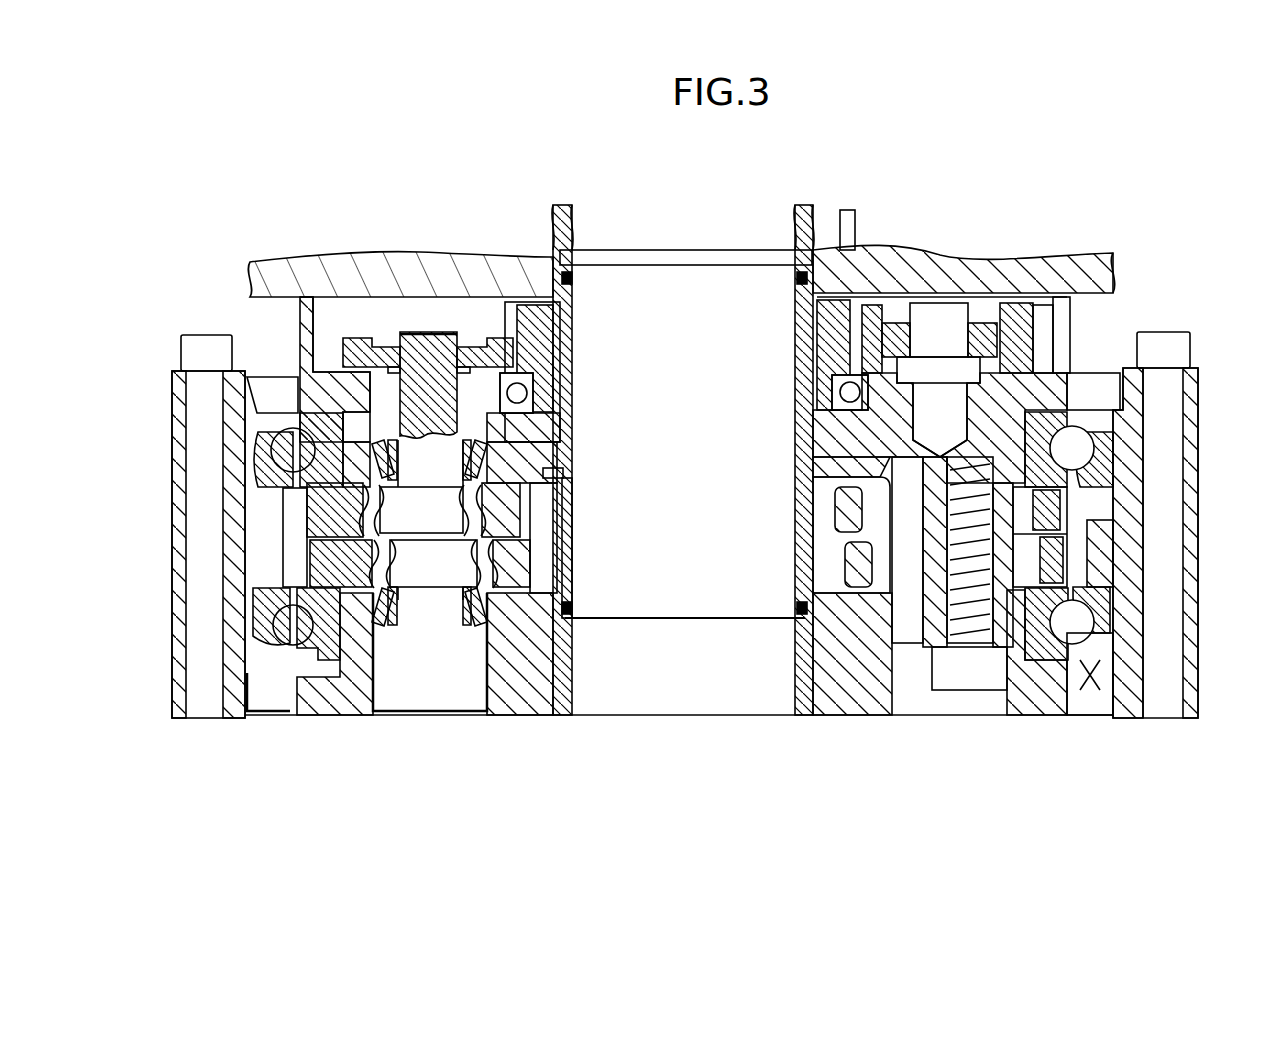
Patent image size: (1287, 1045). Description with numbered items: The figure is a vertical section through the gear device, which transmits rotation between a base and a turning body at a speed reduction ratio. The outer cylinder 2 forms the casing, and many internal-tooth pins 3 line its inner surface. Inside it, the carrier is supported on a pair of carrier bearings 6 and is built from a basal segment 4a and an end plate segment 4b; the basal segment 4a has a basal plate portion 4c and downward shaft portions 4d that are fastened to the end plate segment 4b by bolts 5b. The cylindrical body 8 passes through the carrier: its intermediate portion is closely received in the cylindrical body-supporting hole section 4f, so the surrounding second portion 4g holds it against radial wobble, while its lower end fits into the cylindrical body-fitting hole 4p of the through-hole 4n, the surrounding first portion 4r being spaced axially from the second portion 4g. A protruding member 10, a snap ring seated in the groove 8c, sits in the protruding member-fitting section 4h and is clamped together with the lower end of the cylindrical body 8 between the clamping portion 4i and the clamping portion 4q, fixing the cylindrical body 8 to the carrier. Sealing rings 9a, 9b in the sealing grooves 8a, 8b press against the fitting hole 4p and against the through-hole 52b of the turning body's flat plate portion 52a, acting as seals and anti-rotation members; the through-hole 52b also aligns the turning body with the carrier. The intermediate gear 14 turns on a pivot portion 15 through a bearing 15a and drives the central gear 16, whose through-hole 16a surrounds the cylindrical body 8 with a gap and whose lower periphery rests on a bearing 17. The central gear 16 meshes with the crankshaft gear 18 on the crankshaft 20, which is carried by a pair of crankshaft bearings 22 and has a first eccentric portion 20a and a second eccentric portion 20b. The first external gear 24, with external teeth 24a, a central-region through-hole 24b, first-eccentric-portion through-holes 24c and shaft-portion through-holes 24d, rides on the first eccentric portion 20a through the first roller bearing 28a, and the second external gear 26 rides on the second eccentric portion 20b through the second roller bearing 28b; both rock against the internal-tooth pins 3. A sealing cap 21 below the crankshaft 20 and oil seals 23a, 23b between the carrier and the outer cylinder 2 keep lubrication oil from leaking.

The outer cylinder 2 is at (1198, 522).
The internal-tooth pin 3 is at (1145, 495).
The basal segment 4a is at (1246, 553).
The end plate segment 4b is at (1120, 648).
The basal plate portion 4c is at (1060, 515).
The shaft portion 4d is at (1065, 560).
The cylindrical body-supporting hole section 4f is at (797, 400).
The second portion 4g is at (800, 458).
The protruding member-fitting section 4h is at (572, 488).
The clamping portion 4i is at (575, 445).
The through-hole 4n is at (790, 692).
The cylindrical body-fitting hole 4p is at (575, 605).
The clamping portion 4q is at (600, 640).
The first portion 4r is at (812, 615).
The bolt 5b is at (1070, 720).
The carrier bearing 6 is at (242, 412).
The cylindrical body 8 is at (562, 250).
The sealing groove 8a is at (572, 622).
The sealing groove 8b is at (585, 250).
The groove 8c is at (575, 455).
The sealing ring 9a is at (572, 615).
The sealing ring 9b is at (575, 275).
The protruding member 10 is at (560, 478).
The intermediate gear 14 is at (1165, 352).
The pivot portion 15 is at (1145, 432).
The bearing 15a is at (1160, 390).
The central gear 16 is at (530, 300).
The through-hole 16a is at (822, 300).
The bearing 17 is at (490, 345).
The crankshaft gear 18 is at (355, 340).
The crankshaft 20 is at (428, 332).
The first eccentric portion 20a is at (280, 455).
The second eccentric portion 20b is at (292, 615).
The sealing cap 21 is at (432, 722).
The crankshaft bearing 22 is at (385, 440).
The oil seal 23a is at (300, 385).
The oil seal 23b is at (272, 720).
The first external gear 24 is at (330, 520).
The external tooth 24a is at (330, 560).
The central-region through-hole 24b is at (870, 595).
The first-eccentric-portion through-hole 24c is at (540, 640).
The shaft-portion through-hole 24d is at (975, 660).
The second external gear 26 is at (290, 540).
The first roller bearing 28a is at (370, 510).
The second roller bearing 28b is at (380, 565).
The flat plate portion 52a is at (290, 262).
The through-hole 52b is at (815, 262).